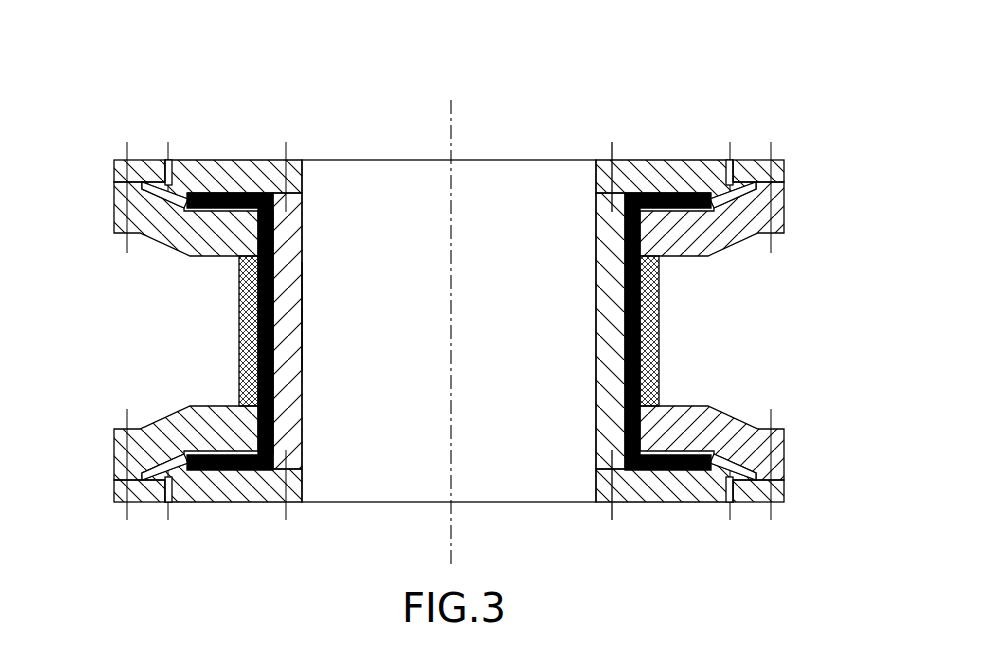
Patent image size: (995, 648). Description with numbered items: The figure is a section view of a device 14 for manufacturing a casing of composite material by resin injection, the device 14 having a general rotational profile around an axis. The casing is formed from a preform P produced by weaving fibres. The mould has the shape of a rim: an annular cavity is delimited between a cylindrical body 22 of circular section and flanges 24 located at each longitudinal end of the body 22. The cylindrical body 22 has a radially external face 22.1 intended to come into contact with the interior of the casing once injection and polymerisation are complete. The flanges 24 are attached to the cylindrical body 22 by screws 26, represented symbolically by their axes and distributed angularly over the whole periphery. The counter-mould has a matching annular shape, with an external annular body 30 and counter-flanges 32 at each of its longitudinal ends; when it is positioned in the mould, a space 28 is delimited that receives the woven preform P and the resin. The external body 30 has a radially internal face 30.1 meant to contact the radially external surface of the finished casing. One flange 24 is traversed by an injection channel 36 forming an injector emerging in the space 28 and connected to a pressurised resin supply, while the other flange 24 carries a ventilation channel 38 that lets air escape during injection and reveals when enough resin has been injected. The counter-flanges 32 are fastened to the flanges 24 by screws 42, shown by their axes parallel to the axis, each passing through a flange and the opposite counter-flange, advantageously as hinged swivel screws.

The device 14 is at (103, 80).
The cylindrical body 22 is at (306, 260).
The radially external face 22.1 is at (274, 350).
The flanges 24 is at (247, 160).
The screws 26 is at (612, 147).
The space 28 is at (632, 160).
The annular body 30 is at (240, 335).
The radially internal face 30.1 is at (658, 335).
The counter-flanges 32 is at (178, 225).
The injection channel 36 is at (168, 502).
The ventilation channel 38 is at (168, 160).
The screws 42 is at (112, 160).
The preform P is at (279, 315).